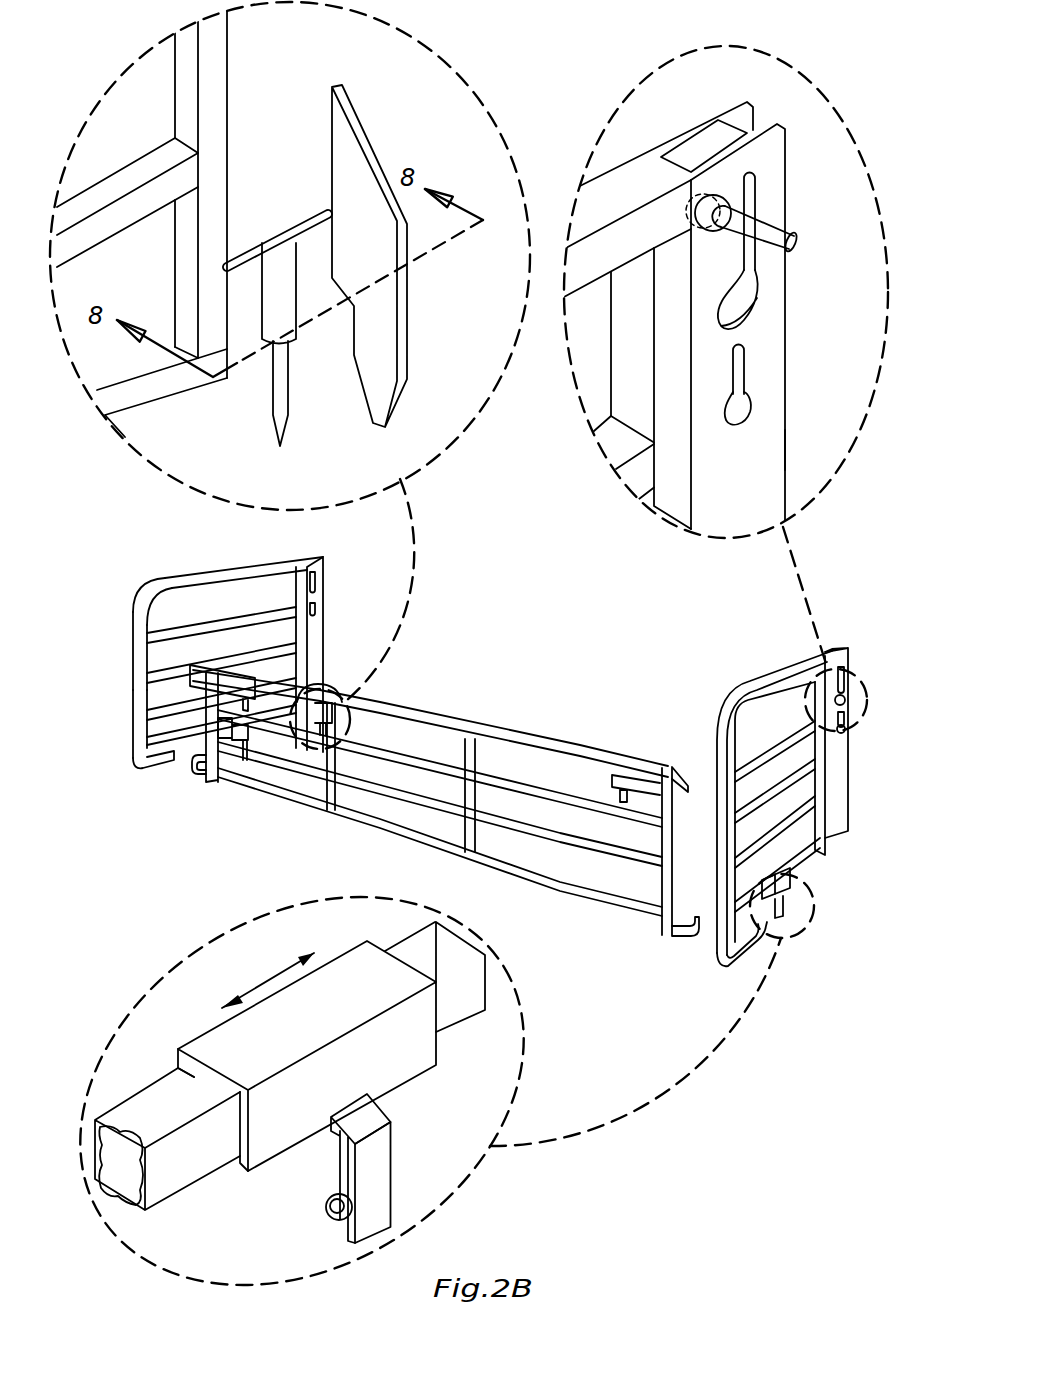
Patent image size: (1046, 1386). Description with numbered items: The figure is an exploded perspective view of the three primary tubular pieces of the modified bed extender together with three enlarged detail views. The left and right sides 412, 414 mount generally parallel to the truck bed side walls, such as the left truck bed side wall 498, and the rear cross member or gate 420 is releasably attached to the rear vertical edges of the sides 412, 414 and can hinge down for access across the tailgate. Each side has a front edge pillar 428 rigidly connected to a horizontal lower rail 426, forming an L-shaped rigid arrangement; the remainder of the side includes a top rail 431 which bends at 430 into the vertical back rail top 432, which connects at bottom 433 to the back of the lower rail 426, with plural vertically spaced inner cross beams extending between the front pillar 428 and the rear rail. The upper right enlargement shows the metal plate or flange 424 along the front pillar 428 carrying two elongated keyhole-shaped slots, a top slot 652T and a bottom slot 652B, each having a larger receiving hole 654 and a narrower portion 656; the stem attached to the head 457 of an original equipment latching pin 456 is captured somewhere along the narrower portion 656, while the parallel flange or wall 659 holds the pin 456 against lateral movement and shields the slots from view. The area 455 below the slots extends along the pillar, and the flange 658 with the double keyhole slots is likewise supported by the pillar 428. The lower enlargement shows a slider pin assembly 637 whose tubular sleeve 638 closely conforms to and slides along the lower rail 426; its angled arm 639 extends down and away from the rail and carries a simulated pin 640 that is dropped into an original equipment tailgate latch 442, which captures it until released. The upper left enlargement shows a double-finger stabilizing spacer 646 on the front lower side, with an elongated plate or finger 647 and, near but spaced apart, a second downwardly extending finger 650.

The left side 412 is at (165, 557).
The right side 414 is at (768, 656).
The rear cross member or gate 420 is at (497, 710).
The metal plate or flange 424 is at (770, 149).
The lower rail 426 is at (152, 739).
The front edge pillar 428 is at (617, 389).
The bend 430 is at (141, 598).
The top rail 431 is at (596, 190).
The vertical back rail top 432 is at (137, 623).
The bottom of back rail 433 is at (137, 686).
The original equipment latch 442 is at (409, 1126).
The area below slots 455 is at (837, 745).
The original equipment latching pin 456 is at (781, 211).
The head 457 is at (745, 200).
The left truck bed side wall 498 is at (200, 1080).
The slider pin assembly 637 is at (243, 762).
The tubular sleeve 638 is at (350, 963).
The angled arm 639 is at (386, 1190).
The simulated pin 640 is at (327, 1202).
The stabilizing spacer 646 is at (395, 120).
The elongated plate or finger 647 is at (406, 299).
The downwardly extending finger 650 is at (272, 399).
The top keyhole-shaped slot 652T is at (779, 283).
The bottom keyhole-shaped slot 652B is at (770, 345).
The receiving hole 654 is at (761, 309).
The narrower portion 656 is at (760, 242).
The flange 658 is at (763, 448).
The parallel flange or wall 659 is at (710, 125).